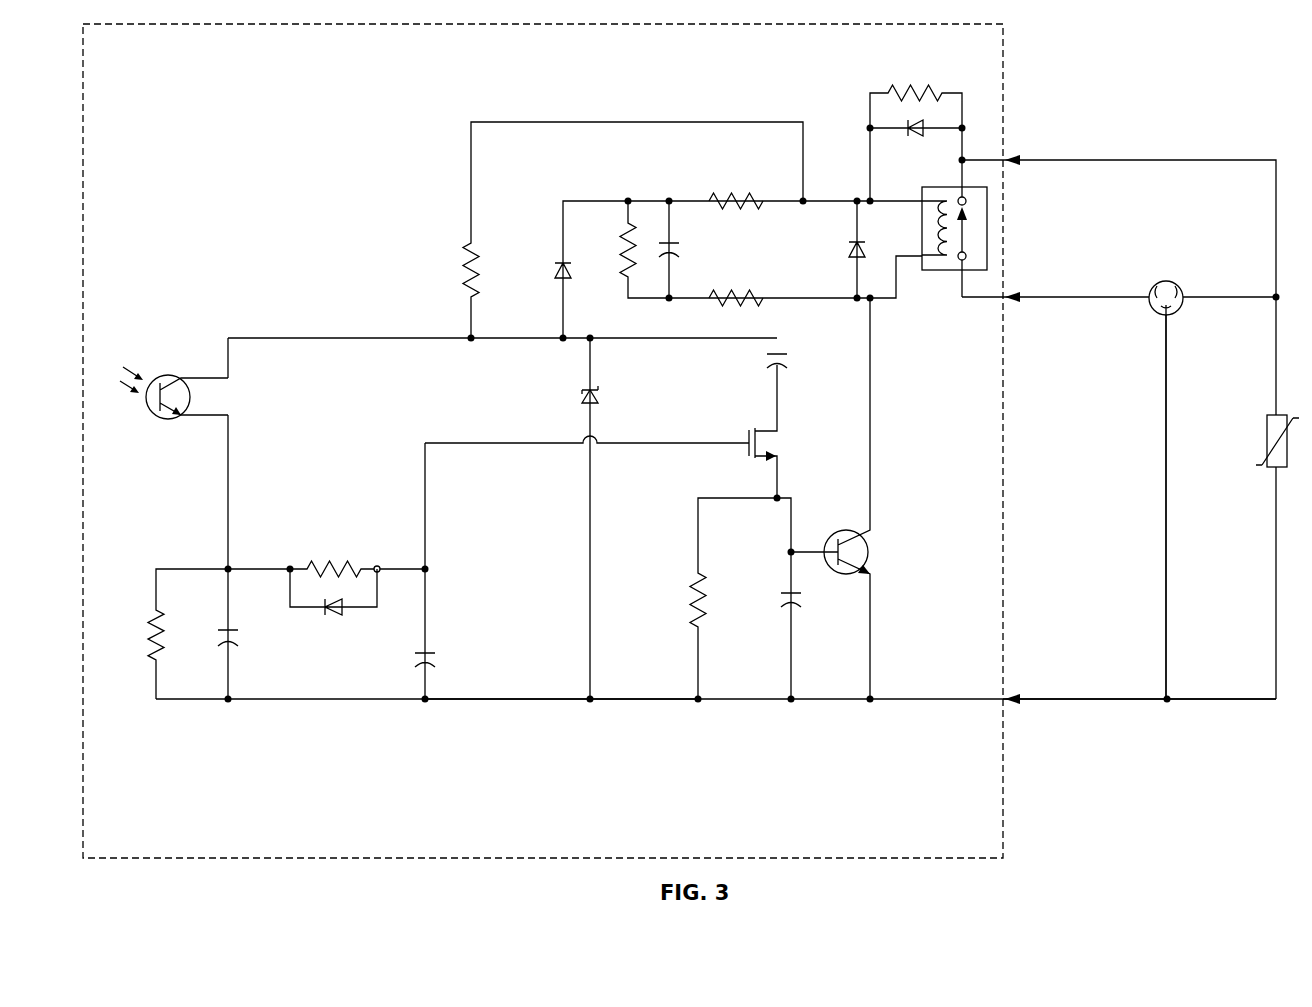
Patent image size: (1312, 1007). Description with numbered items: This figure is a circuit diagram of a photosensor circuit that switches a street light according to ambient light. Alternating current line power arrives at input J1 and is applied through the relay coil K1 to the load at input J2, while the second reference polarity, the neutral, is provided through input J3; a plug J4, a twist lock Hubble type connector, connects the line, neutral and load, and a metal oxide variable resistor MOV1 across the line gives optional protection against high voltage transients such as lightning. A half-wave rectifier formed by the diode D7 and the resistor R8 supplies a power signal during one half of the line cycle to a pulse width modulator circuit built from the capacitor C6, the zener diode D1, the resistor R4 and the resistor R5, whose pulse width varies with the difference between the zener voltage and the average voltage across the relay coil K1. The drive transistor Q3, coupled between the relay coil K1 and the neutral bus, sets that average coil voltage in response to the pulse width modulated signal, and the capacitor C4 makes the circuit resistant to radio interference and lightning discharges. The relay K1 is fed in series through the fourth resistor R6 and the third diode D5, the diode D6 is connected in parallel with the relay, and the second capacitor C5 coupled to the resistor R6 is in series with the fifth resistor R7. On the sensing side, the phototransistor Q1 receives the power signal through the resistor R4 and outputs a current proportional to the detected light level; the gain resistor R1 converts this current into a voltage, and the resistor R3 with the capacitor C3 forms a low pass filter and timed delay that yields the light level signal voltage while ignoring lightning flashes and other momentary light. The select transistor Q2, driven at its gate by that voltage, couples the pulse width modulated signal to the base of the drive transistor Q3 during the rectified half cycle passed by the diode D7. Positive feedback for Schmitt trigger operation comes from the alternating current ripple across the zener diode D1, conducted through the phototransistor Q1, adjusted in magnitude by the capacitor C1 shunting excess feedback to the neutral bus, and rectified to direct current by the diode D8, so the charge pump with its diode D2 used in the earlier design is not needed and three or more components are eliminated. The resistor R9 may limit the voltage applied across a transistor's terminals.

The phototransistor Q1 is at (174, 533).
The gain resistor R1 is at (161, 634).
The capacitor C1 is at (257, 662).
The resistor R3 is at (326, 544).
The diode D8 is at (333, 606).
The capacitor C3 is at (458, 571).
The resistor R4 is at (600, 230).
The third diode D5 is at (724, 269).
The resistor R9 is at (753, 249).
The second capacitor C5 is at (705, 249).
The fourth resistor R6 is at (736, 173).
The fifth resistor R7 is at (749, 278).
The third diode D6 is at (872, 249).
The resistor R8 is at (916, 117).
The diode D7 is at (916, 153).
The relay coil K1 is at (1022, 242).
The input J1 is at (1119, 275).
The input J2 is at (1119, 486).
The input J3 is at (1139, 689).
The plug J4 is at (1143, 507).
The metal oxide variable resistor MOV1 is at (1257, 543).
The zener diode D1 is at (618, 401).
The select transistor Q2 is at (647, 532).
The capacitor C6 is at (811, 363).
The resistor R5 is at (733, 598).
The capacitor C4 is at (826, 605).
The drive transistor Q3 is at (882, 498).
The diode D2 is at (561, 731).